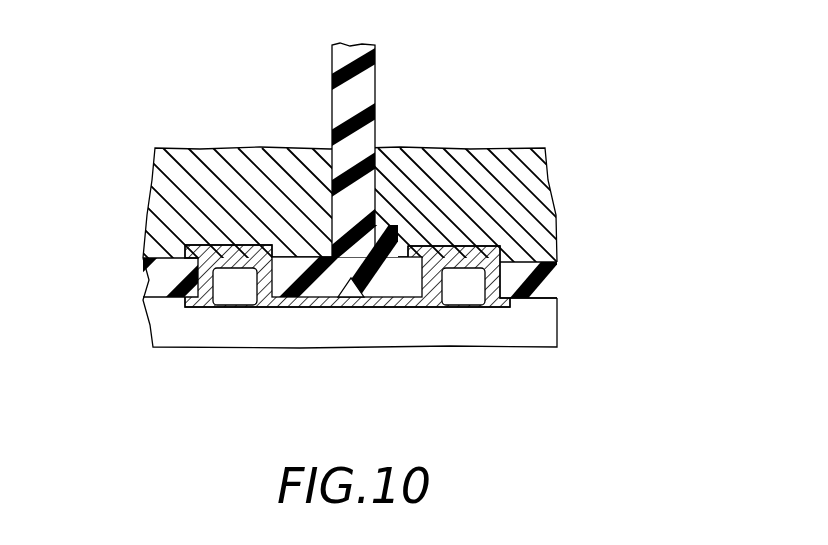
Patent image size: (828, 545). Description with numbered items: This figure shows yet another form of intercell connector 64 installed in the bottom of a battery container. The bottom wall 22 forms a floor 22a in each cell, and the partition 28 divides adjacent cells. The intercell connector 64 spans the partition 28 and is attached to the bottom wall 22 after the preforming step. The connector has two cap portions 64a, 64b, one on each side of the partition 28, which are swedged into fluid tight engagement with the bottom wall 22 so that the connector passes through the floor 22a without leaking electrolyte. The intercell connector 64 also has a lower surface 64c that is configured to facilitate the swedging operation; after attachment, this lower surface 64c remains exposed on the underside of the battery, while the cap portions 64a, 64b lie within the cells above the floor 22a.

The bottom wall 22 is at (152, 288).
The floor 22a is at (556, 258).
The partition 28 is at (367, 93).
The intercell connector 64 is at (379, 245).
The cap portion 64a is at (245, 245).
The cap portion 64b is at (478, 250).
The lower surface 64c is at (283, 308).